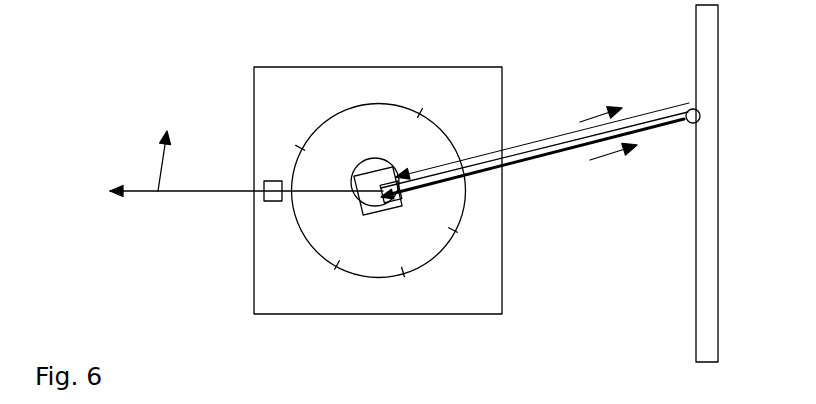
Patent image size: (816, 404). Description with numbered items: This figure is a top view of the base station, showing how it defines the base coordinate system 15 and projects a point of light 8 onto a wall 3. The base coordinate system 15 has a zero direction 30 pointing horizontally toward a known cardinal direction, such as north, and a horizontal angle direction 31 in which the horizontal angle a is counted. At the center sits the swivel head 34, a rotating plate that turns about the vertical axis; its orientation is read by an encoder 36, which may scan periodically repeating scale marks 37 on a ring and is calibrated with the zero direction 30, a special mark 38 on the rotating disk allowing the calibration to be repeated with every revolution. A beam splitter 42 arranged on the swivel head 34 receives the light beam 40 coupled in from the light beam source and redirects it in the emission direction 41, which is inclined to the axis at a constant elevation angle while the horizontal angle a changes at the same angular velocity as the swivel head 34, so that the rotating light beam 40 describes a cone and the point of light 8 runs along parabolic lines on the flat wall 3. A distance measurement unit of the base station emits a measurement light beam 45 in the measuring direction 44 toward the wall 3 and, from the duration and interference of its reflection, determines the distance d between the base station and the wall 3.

The wall 3 is at (702, 78).
The point of light 8 is at (700, 114).
The base coordinate system 15 is at (82, 96).
The zero direction 30 is at (145, 191).
The horizontal angle direction 31 is at (162, 162).
The swivel head 34 is at (327, 235).
The encoder 36 is at (264, 192).
The scale marks 37 is at (338, 265).
The special mark 38 is at (463, 180).
The light beam 40 is at (518, 146).
The emission direction 41 is at (600, 157).
The beam splitter 42 is at (358, 197).
The measuring direction 44 is at (612, 111).
The measurement light beam 45 is at (552, 140).
The horizontal angle a is at (367, 158).
The distance d is at (660, 110).